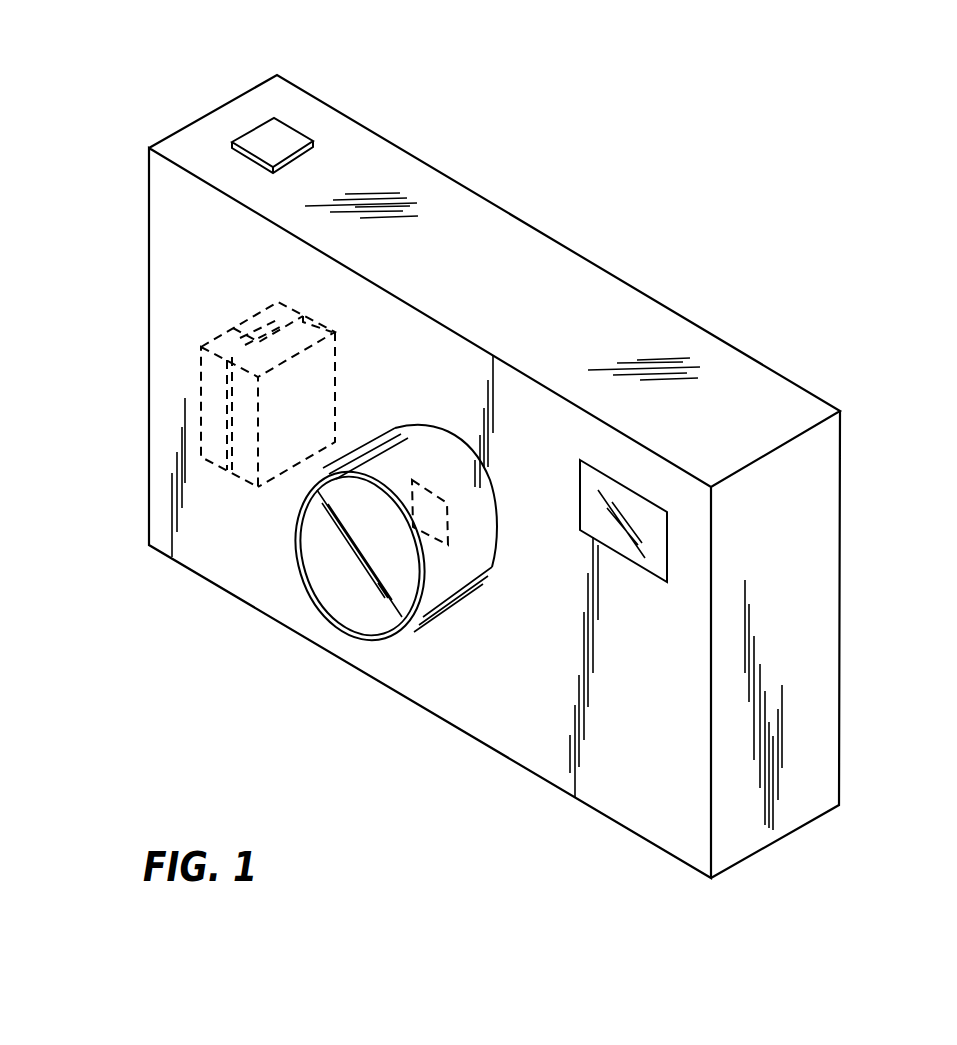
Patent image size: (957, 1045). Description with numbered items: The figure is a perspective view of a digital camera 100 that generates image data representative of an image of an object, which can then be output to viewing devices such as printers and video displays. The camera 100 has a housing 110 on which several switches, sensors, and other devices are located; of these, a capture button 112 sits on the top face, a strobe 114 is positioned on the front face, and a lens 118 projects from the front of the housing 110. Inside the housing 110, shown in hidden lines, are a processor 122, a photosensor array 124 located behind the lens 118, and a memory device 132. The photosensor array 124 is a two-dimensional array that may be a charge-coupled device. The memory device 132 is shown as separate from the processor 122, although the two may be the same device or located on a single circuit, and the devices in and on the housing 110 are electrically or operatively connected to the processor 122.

The digital camera 100 is at (750, 140).
The housing 110 is at (838, 703).
The capture button 112 is at (283, 135).
The strobe 114 is at (667, 547).
The lens 118 is at (333, 605).
The processor 122 is at (233, 328).
The photosensor array 124 is at (460, 547).
The memory device 132 is at (265, 310).